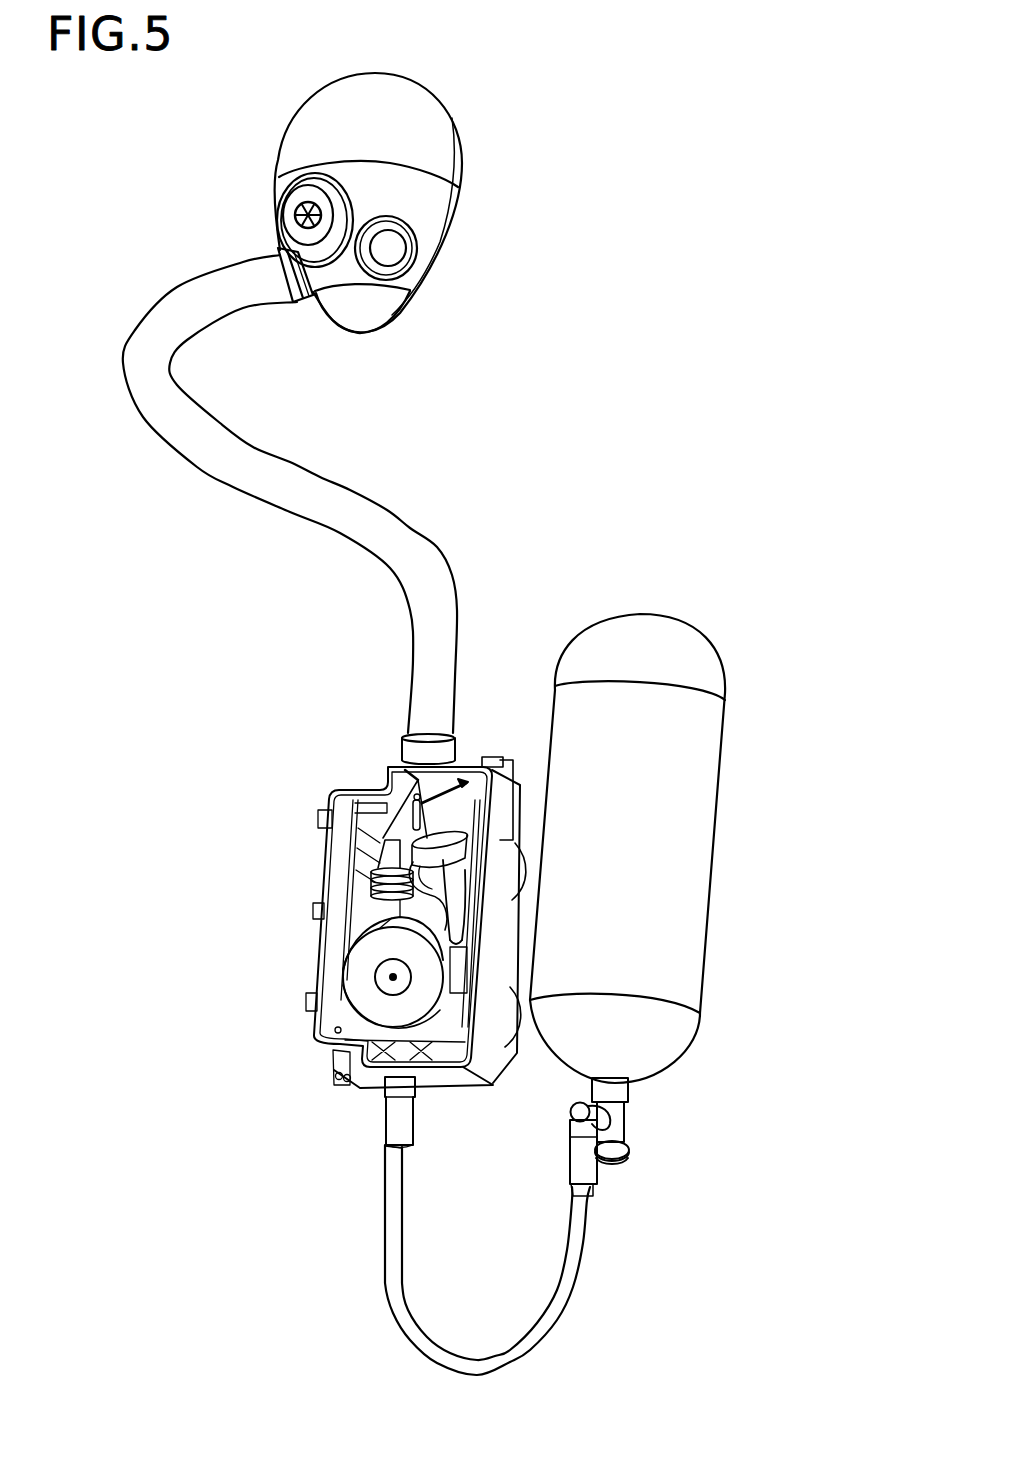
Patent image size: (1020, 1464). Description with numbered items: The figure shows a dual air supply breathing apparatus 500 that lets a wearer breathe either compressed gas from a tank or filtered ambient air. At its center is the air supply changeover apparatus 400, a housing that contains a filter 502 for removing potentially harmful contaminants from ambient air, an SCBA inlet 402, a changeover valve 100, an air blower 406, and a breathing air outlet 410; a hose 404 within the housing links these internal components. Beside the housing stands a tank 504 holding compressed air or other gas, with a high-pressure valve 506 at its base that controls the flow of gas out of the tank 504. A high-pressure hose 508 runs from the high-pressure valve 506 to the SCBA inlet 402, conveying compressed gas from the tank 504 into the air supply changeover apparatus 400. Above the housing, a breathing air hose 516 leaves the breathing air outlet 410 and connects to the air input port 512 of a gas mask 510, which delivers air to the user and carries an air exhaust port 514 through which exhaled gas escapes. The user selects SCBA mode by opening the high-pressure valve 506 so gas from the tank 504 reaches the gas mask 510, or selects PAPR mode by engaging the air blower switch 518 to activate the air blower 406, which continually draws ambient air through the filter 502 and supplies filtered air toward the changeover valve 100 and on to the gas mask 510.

The changeover valve 100 is at (362, 860).
The air supply changeover apparatus 400 is at (282, 1008).
The SCBA inlet 402 is at (385, 1128).
The hose 404 is at (472, 898).
The air blower 406 is at (377, 943).
The breathing air outlet 410 is at (400, 753).
The dual air supply breathing apparatus 500 is at (126, 1278).
The filter 502 is at (513, 840).
The tank 504 is at (722, 860).
The high-pressure valve 506 is at (623, 1133).
The high-pressure hose 508 is at (578, 1299).
The gas mask 510 is at (486, 203).
The air input port 512 is at (306, 308).
The air exhaust port 514 is at (277, 220).
The breathing air hose 516 is at (235, 483).
The air blower switch 518 is at (487, 753).